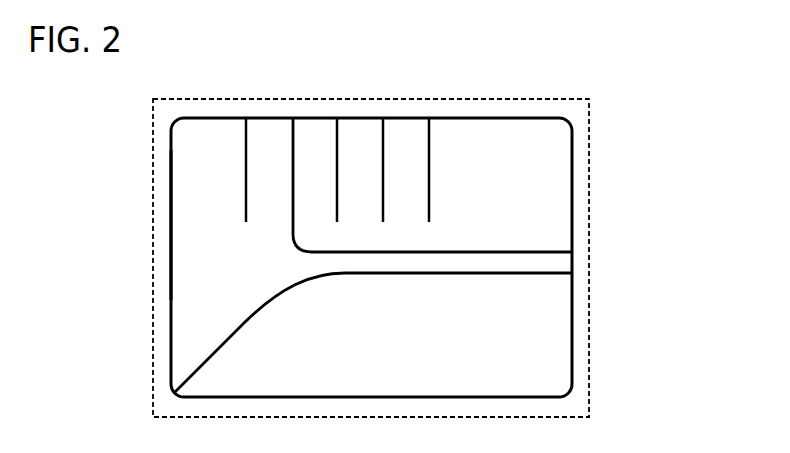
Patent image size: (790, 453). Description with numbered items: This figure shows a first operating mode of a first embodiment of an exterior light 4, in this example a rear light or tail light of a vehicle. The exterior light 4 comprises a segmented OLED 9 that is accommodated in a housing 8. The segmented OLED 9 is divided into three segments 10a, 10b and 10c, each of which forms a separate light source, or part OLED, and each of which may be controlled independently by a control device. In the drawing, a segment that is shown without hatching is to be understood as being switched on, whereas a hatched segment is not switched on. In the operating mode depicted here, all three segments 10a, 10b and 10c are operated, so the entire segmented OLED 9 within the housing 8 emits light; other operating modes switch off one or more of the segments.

The exterior light 4 is at (618, 179).
The housing 8 is at (590, 309).
The segmented OLED 9 is at (168, 222).
The segment 10a is at (551, 358).
The segment 10b is at (557, 263).
The segment 10c is at (355, 132).